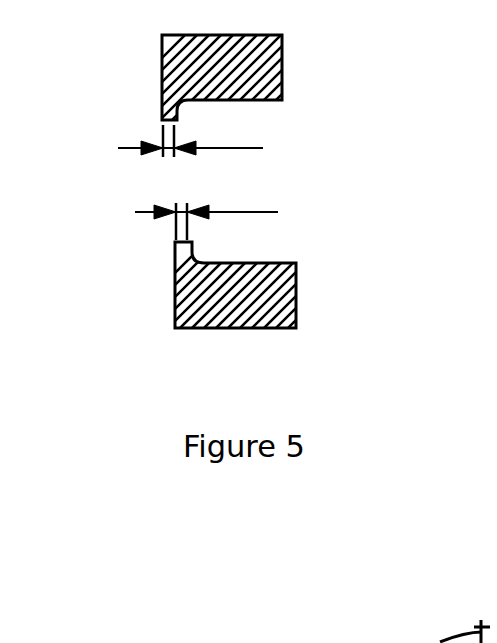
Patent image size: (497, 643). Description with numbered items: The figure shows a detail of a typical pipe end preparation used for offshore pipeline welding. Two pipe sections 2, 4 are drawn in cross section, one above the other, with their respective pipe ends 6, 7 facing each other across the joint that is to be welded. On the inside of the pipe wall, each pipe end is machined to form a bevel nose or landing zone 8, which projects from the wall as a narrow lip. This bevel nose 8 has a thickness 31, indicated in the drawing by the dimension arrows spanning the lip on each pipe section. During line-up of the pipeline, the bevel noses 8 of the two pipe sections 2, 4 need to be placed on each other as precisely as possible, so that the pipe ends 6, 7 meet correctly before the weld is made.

The pipe section 2 is at (275, 303).
The pipe section 4 is at (272, 70).
The pipe end 6 is at (288, 139).
The pipe end 7 is at (279, 228).
The bevel nose 8 is at (163, 112).
The thickness 31 is at (187, 208).